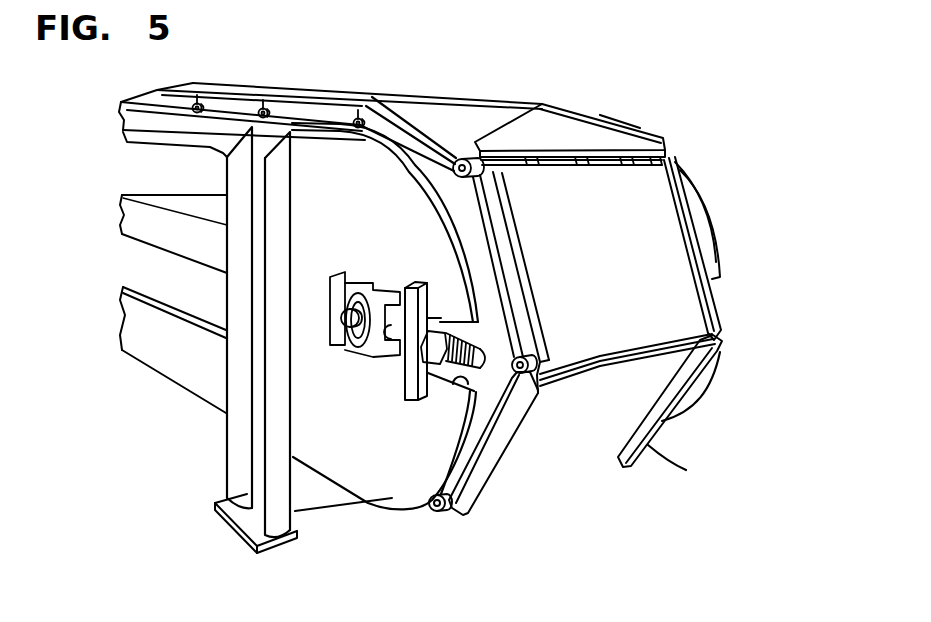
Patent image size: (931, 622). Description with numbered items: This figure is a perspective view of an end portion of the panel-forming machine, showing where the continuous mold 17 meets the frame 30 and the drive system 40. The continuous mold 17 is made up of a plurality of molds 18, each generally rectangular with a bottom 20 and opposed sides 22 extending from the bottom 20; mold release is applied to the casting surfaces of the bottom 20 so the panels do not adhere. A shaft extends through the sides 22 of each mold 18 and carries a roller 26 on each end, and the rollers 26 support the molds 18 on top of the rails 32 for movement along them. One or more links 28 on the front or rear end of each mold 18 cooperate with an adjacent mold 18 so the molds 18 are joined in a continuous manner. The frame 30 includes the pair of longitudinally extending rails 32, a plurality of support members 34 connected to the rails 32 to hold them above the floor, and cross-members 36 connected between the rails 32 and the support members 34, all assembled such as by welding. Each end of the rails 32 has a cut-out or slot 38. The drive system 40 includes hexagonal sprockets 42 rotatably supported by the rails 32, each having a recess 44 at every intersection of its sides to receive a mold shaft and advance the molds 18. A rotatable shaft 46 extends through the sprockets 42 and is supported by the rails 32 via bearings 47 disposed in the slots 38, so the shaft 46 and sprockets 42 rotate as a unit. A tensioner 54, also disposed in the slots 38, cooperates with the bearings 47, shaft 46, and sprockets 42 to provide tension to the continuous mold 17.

The continuous mold 17 is at (570, 99).
The mold 18 is at (385, 100).
The bottom 20 is at (566, 112).
The sides 22 is at (427, 132).
The roller 26 is at (357, 118).
The link 28 is at (637, 163).
The frame 30 is at (222, 455).
The rail 32 is at (150, 125).
The support member 34 is at (237, 365).
The cross-member 36 is at (315, 508).
The slot 38 is at (465, 388).
The drive system 40 is at (572, 424).
The sprocket 42 is at (493, 388).
The recess 44 is at (528, 358).
The rotatable shaft 46 is at (350, 320).
The bearing 47 is at (357, 335).
The tensioner 54 is at (405, 393).